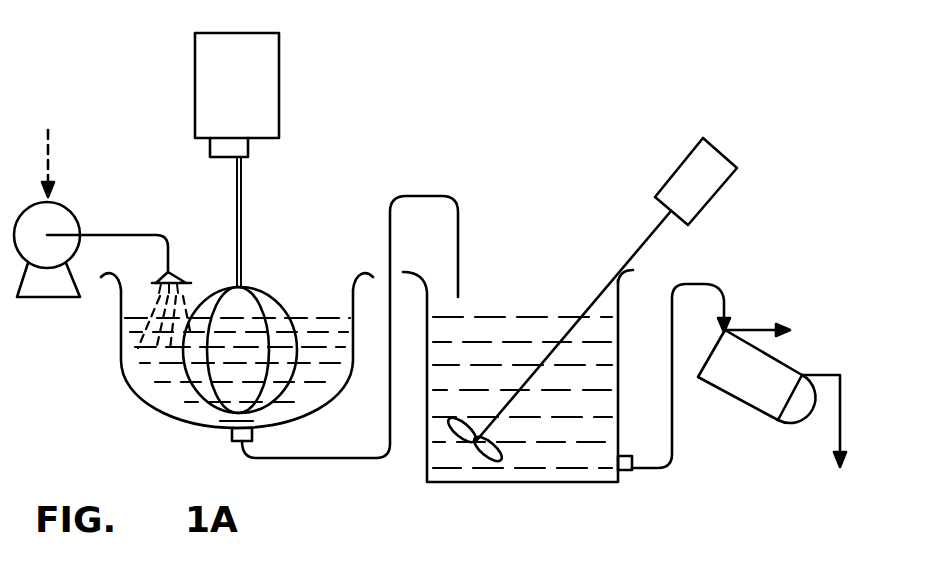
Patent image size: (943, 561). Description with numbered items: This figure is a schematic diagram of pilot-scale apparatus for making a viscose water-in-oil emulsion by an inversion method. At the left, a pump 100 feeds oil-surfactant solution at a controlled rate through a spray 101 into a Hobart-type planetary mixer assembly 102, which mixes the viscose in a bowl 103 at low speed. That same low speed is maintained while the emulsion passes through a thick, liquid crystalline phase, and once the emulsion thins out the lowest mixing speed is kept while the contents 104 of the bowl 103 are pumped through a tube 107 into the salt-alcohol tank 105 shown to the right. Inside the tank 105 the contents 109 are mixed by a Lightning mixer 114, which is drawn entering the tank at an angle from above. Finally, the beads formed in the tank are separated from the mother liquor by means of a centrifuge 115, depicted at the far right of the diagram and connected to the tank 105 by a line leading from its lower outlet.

The pump 100 is at (76, 228).
The spray 101 is at (184, 278).
The planetary mixer assembly 102 is at (283, 92).
The bowl 103 is at (118, 332).
The contents 104 is at (170, 377).
The salt-alcohol tank 105 is at (426, 480).
The tube 107 is at (384, 242).
The contents 109 is at (545, 460).
The Lightning mixer 114 is at (715, 192).
The centrifuge 115 is at (735, 400).